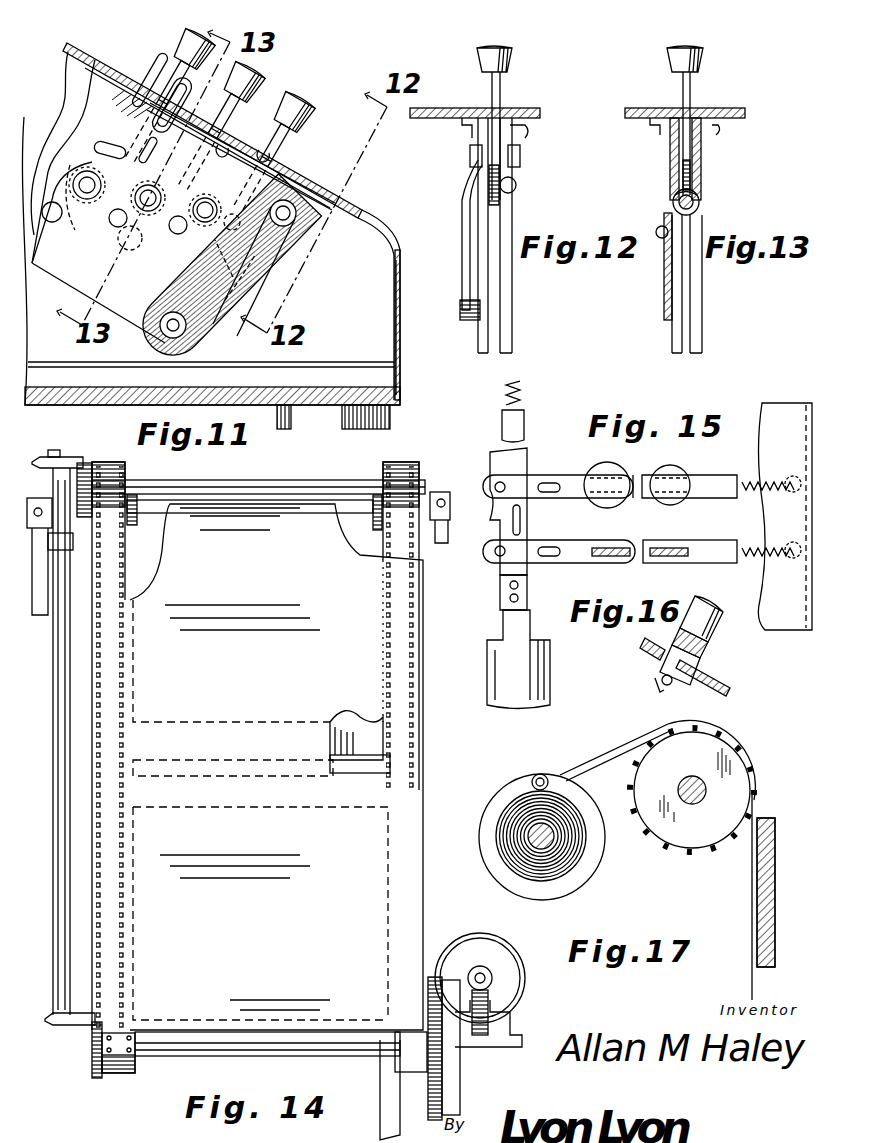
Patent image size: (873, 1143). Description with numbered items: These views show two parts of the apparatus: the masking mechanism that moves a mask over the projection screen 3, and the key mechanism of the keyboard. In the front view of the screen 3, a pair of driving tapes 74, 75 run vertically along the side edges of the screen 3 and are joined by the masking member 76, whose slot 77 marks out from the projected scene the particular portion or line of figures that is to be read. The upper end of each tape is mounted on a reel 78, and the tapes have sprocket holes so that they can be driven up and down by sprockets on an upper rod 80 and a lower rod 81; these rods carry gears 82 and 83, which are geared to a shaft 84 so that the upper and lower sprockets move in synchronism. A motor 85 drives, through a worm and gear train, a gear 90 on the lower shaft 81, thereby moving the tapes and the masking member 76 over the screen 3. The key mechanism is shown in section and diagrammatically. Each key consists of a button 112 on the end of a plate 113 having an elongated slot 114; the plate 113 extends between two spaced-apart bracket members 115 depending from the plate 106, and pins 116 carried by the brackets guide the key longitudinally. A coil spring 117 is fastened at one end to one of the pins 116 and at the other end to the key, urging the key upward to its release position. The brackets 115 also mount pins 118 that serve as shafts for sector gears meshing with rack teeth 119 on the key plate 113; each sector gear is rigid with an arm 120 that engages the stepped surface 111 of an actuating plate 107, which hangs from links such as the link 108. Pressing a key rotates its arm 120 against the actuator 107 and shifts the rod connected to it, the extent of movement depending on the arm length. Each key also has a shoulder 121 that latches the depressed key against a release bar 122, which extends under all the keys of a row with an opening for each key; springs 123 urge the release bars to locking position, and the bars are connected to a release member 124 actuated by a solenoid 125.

In FIG. 14, the screen 3 is at (365, 640).
In FIG. 14, the driving tape 74 is at (108, 567).
In FIG. 14, the driving tape 75 is at (418, 552).
In FIG. 14, the masking member 76 is at (348, 735).
In FIG. 14, the slot 77 is at (380, 764).
In FIG. 17, the reel 78 is at (603, 870).
In FIG. 17, the rod 80 is at (706, 786).
In FIG. 14, the rod 80 is at (292, 483).
In FIG. 14, the rod 81 is at (336, 1046).
In FIG. 14, the gear 82 is at (86, 470).
In FIG. 14, the gear 83 is at (95, 1070).
In FIG. 14, the shaft 84 is at (62, 760).
In FIG. 14, the motor 85 is at (498, 948).
In FIG. 14, the gear 90 is at (445, 1085).
In FIG. 11, the plate 106 is at (388, 228).
In FIG. 12, the plate 106 is at (474, 170).
In FIG. 16, the plate 106 is at (733, 683).
In FIG. 11, the actuating plate 107 is at (127, 300).
In FIG. 12, the actuating plate 107 is at (478, 325).
In FIG. 13, the actuating plate 107 is at (665, 270).
In FIG. 11, the link 108 is at (210, 300).
In FIG. 12, the link 108 is at (467, 240).
In FIG. 11, the stepped surface 111 is at (72, 212).
In FIG. 11, the button 112 is at (305, 113).
In FIG. 12, the button 112 is at (506, 60).
In FIG. 13, the button 112 is at (708, 60).
In FIG. 16, the button 112 is at (702, 652).
In FIG. 12, the plate 113 is at (500, 94).
In FIG. 13, the plate 113 is at (691, 95).
In FIG. 11, the elongated slot 114 is at (143, 140).
In FIG. 16, the elongated slot 114 is at (675, 690).
In FIG. 11, the bracket member 115 is at (305, 200).
In FIG. 12, the bracket member 115 is at (470, 126).
In FIG. 13, the bracket member 115 is at (658, 127).
In FIG. 11, the pin 116 is at (170, 100).
In FIG. 16, the pin 116 is at (660, 680).
In FIG. 11, the coil spring 117 is at (100, 150).
In FIG. 13, the coil spring 117 is at (671, 168).
In FIG. 11, the pin 118 is at (233, 277).
In FIG. 13, the pin 118 is at (702, 190).
In FIG. 11, the rack teeth 119 is at (262, 151).
In FIG. 13, the rack teeth 119 is at (701, 160).
In FIG. 11, the arm 120 is at (47, 200).
In FIG. 13, the arm 120 is at (672, 196).
In FIG. 11, the shoulder 121 is at (166, 75).
In FIG. 15, the shoulder 121 is at (597, 470).
In FIG. 11, the release bar 122 is at (68, 47).
In FIG. 15, the spring 123 is at (750, 478).
In FIG. 15, the release member 124 is at (517, 470).
In FIG. 15, the solenoid 125 is at (550, 677).